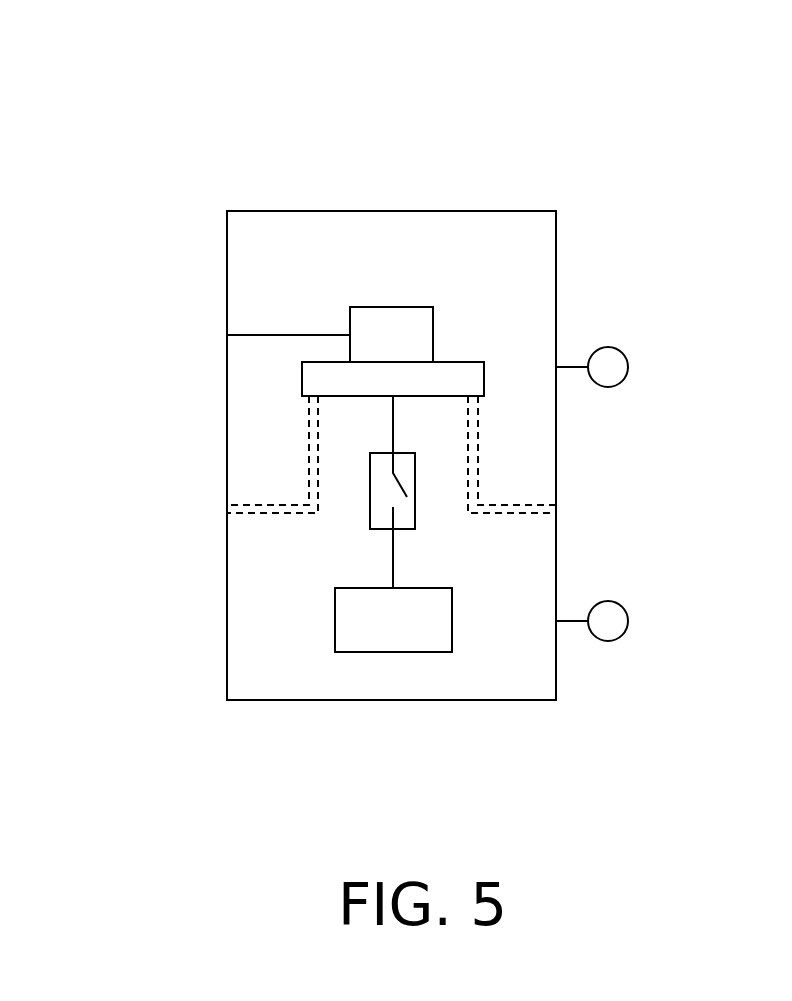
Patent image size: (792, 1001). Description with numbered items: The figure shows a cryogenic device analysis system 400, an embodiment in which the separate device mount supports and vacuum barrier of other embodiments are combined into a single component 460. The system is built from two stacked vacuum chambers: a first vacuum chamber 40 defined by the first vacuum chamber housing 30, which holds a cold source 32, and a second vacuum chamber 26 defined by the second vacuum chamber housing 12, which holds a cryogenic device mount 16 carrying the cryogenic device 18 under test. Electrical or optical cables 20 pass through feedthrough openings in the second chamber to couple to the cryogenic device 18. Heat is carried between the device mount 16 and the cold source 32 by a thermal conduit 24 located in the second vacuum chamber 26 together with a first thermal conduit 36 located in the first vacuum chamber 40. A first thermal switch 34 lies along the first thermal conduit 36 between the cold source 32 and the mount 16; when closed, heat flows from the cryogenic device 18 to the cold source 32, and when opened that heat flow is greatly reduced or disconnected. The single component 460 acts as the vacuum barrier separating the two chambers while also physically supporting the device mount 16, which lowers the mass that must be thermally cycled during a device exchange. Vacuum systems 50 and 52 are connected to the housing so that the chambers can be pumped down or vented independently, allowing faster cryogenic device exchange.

The cryogenic device analysis system 400 is at (655, 122).
The second vacuum chamber housing 12 is at (227, 380).
The first vacuum chamber housing 30 is at (227, 666).
The second vacuum chamber 26 is at (260, 252).
The first vacuum chamber 40 is at (520, 665).
The electrical or optical cables 20 is at (275, 335).
The cryogenic device 18 is at (392, 307).
The cryogenic device mount 16 is at (454, 362).
The thermal conduit 24 is at (393, 408).
The single component 460 is at (309, 438).
The first thermal switch 34 is at (370, 507).
The first thermal conduit 36 is at (393, 560).
The cold source 32 is at (335, 612).
The vacuum system 50 is at (622, 353).
The vacuum system 52 is at (622, 607).